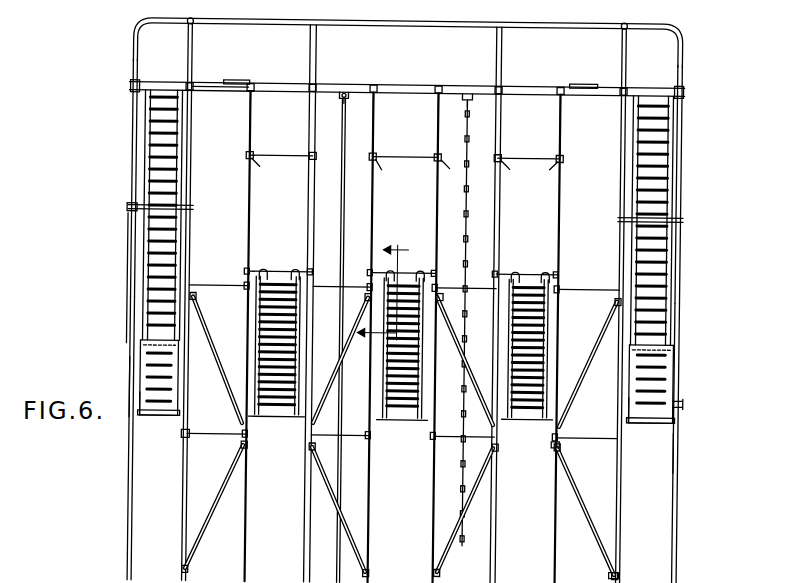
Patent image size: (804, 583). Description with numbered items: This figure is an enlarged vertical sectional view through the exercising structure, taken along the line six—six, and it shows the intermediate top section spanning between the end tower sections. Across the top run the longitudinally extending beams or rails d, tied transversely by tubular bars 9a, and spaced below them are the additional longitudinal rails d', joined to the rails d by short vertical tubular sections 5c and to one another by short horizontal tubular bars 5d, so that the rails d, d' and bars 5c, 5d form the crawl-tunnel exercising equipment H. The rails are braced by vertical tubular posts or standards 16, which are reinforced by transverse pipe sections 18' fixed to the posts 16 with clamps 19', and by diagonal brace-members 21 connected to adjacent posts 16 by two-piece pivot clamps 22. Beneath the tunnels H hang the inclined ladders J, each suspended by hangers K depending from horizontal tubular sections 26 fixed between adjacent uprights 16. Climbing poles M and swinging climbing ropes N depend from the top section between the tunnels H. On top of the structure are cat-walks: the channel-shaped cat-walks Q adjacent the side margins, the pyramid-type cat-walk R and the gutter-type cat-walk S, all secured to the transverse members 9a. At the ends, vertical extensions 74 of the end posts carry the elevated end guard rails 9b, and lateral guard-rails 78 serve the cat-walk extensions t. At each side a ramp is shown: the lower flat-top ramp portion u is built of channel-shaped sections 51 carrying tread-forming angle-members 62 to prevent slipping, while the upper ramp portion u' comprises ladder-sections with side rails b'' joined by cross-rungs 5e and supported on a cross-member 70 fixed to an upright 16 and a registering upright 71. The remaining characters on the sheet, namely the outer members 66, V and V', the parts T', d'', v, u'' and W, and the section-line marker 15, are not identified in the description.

The guard-rail 78 is at (140, 24).
The end guard rail 9b is at (458, 22).
The upright extension 74 is at (306, 47).
The post 16 is at (190, 186).
The upright 71 is at (680, 138).
The lower outer upright 66 is at (130, 512).
The tubular bar 9a is at (384, 84).
The cat-walk extension t is at (152, 84).
The beam section T' is at (221, 68).
The cat-walk Q is at (232, 83).
The rail d is at (407, 76).
The cat-walk R is at (342, 84).
The cat-walk S is at (466, 84).
The climbing pole M is at (340, 210).
The climbing rope N is at (466, 228).
The tubular section 5c is at (249, 102).
The tubular bar 5d is at (288, 152).
The crawl-tunnel exercising equipment H is at (245, 154).
The rail d' is at (436, 145).
The coupling d'' is at (402, 182).
The upper ramp portion u' is at (407, 192).
The cross-member 70 is at (126, 210).
The guide rail v is at (127, 282).
The side rail b'' is at (434, 218).
The cross-rung 5e is at (165, 262).
The tread-forming angle-member 62 is at (176, 382).
The channel-shaped section 51 is at (181, 418).
The box side u'' is at (121, 402).
The lower left upright section V' is at (111, 386).
The lower ramp portion u is at (671, 393).
The hook W is at (684, 401).
The lower right upright section V is at (691, 453).
The hanger K is at (522, 273).
The tubular section 26 is at (286, 273).
The inclined ladder J is at (290, 342).
The transverse pipe section 18' is at (403, 377).
The diagonal brace-member 21 is at (210, 342).
The clamp 19' is at (168, 440).
The pivot clamp 22 is at (555, 446).
The section line 15 is at (387, 295).